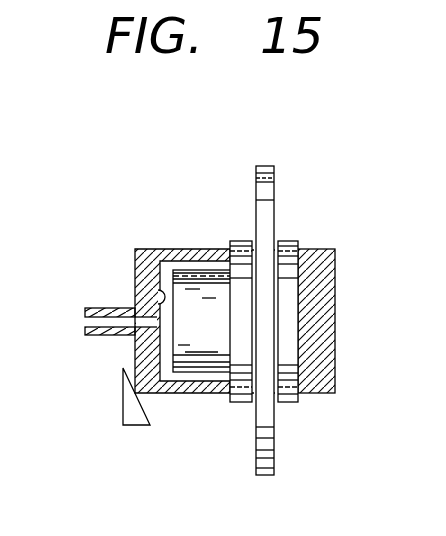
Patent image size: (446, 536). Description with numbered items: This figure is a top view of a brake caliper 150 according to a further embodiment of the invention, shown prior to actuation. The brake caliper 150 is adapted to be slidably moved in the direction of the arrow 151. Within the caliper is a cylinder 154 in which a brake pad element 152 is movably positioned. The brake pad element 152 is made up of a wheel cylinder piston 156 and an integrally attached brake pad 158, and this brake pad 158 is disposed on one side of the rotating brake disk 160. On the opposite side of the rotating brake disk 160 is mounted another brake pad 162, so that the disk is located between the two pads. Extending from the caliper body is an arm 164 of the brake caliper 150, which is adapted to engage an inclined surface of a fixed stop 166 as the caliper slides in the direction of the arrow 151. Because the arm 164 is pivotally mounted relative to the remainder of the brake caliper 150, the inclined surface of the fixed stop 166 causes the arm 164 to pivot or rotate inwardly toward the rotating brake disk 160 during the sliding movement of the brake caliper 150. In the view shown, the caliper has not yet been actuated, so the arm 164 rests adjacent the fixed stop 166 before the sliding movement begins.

The brake caliper 150 is at (160, 224).
The arrow 151 is at (356, 280).
The brake pad element 152 is at (156, 271).
The cylinder 154 is at (150, 290).
The wheel cylinder piston 156 is at (202, 270).
The brake pad 158 is at (243, 403).
The rotating brake disk 160 is at (288, 210).
The brake pad 162 is at (287, 403).
The arm 164 is at (138, 345).
The fixed stop 166 is at (138, 428).